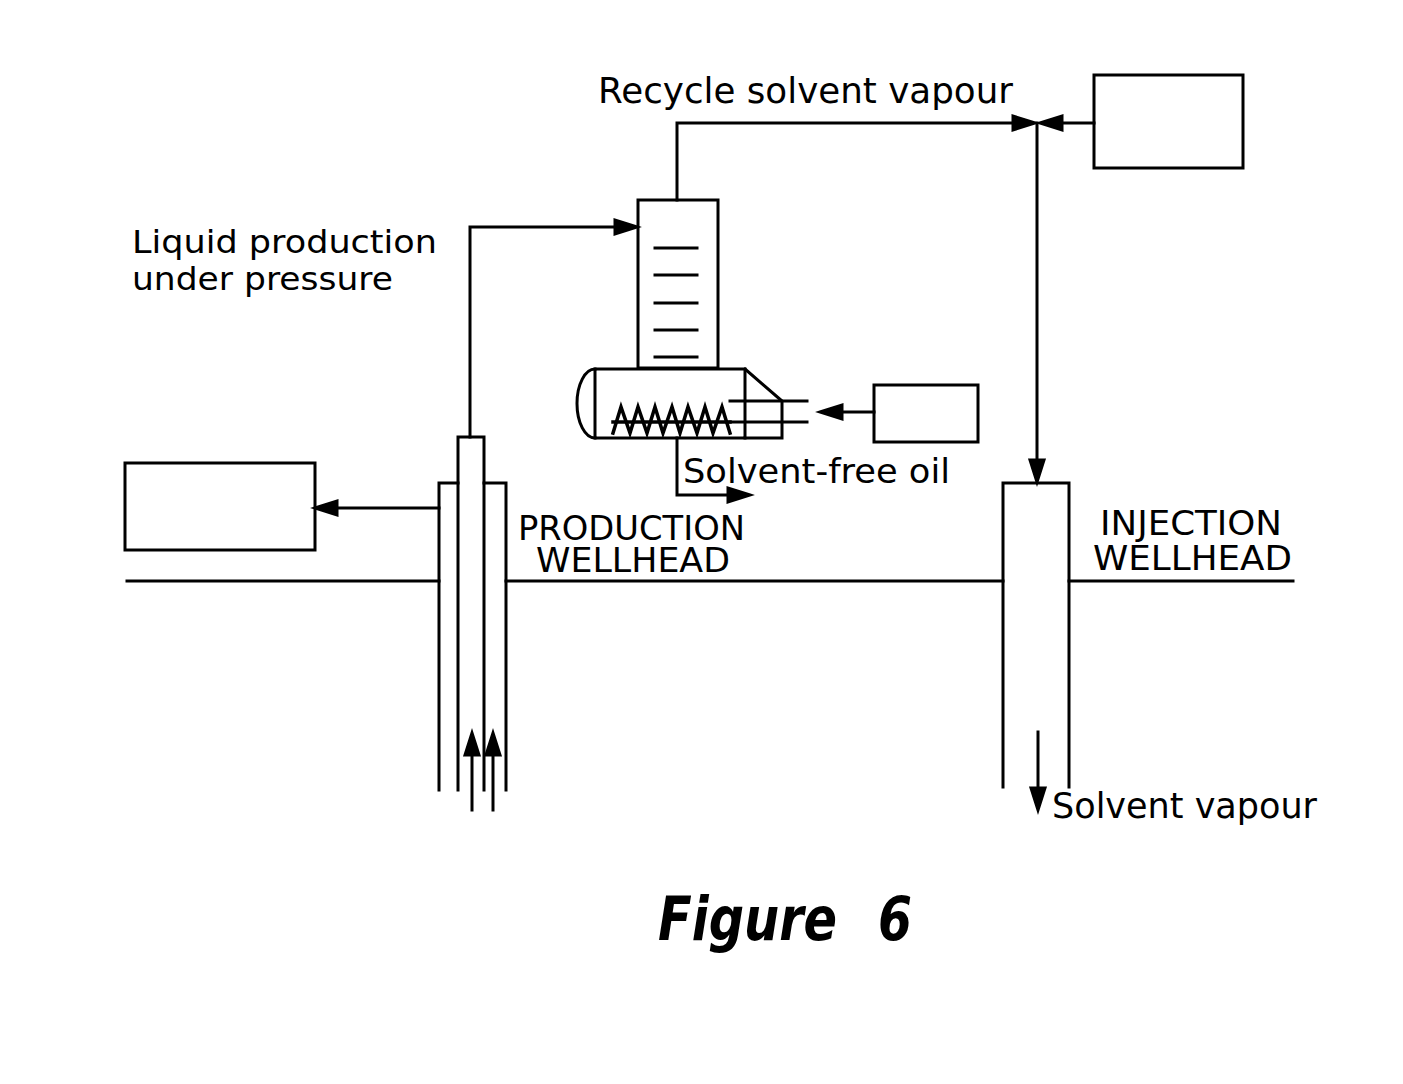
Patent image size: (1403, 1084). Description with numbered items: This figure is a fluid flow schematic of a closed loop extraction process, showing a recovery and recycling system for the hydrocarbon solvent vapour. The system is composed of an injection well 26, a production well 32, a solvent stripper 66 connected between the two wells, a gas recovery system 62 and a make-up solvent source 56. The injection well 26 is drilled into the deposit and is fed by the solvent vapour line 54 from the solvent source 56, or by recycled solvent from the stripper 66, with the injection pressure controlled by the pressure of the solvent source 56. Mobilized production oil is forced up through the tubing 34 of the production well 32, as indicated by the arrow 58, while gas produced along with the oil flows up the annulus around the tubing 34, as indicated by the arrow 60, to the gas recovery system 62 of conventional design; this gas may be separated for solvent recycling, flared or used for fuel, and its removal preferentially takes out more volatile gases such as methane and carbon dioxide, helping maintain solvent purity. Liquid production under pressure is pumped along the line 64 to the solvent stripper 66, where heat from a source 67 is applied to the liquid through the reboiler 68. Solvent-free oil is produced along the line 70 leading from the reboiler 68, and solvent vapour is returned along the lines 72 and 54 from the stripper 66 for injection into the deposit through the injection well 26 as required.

The injection well 26 is at (1069, 672).
The production well 32 is at (440, 662).
The tubing 34 is at (485, 672).
The solvent vapour line 54 is at (1037, 223).
The solvent source 56 is at (1243, 117).
The arrow 58 is at (456, 797).
The arrow 60 is at (510, 797).
The gas recovery system 62 is at (232, 463).
The line 64 is at (470, 318).
The solvent stripper 66 is at (718, 230).
The heat source 67 is at (892, 385).
The reboiler 68 is at (737, 368).
The line 70 is at (753, 495).
The line 72 is at (803, 123).